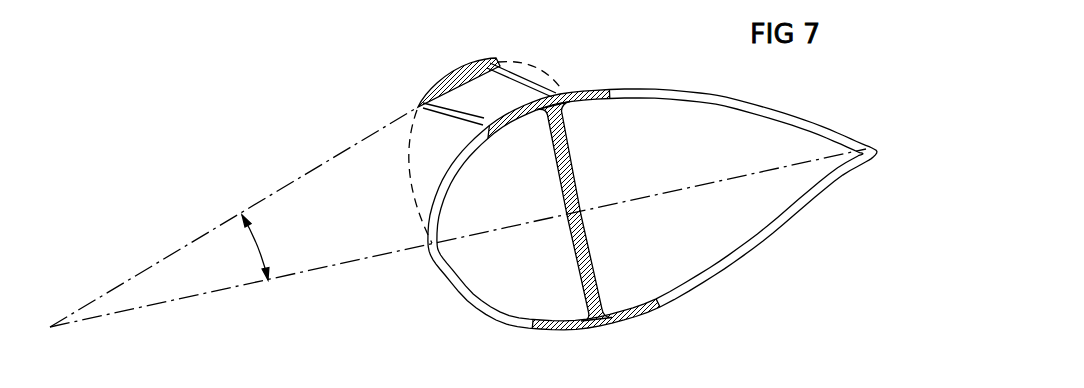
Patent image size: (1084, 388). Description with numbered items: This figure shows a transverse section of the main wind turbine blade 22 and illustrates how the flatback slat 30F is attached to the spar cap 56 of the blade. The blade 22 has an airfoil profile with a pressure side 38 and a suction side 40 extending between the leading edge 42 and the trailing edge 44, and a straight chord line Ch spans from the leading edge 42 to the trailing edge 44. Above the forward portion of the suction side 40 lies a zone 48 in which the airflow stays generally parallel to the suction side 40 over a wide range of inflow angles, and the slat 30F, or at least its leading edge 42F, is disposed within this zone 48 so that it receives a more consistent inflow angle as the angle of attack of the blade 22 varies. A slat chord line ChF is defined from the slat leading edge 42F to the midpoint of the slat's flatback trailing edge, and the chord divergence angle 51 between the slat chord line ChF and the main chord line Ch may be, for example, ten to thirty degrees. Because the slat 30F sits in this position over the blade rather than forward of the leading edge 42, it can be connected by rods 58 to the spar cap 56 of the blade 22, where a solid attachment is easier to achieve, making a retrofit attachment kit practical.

The blade 22 is at (747, 107).
The flatback slat 30F is at (452, 74).
The pressure side 38 is at (693, 287).
The suction side 40 is at (655, 88).
The leading edge 42 is at (431, 245).
The leading edge of the slat 42F is at (423, 109).
The trailing edge 44 is at (876, 150).
The zone 48 is at (407, 168).
The chord divergence angle 51 is at (260, 247).
The spar cap 56 is at (505, 120).
The rods 58 is at (513, 87).
The chord line Ch is at (623, 202).
The slat chord line ChF is at (330, 162).